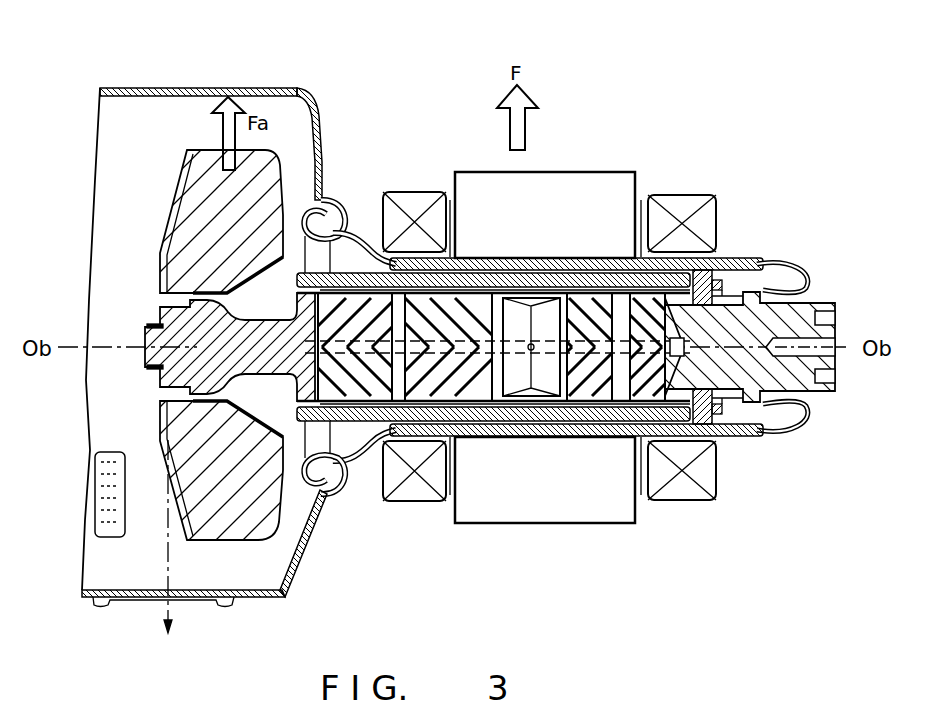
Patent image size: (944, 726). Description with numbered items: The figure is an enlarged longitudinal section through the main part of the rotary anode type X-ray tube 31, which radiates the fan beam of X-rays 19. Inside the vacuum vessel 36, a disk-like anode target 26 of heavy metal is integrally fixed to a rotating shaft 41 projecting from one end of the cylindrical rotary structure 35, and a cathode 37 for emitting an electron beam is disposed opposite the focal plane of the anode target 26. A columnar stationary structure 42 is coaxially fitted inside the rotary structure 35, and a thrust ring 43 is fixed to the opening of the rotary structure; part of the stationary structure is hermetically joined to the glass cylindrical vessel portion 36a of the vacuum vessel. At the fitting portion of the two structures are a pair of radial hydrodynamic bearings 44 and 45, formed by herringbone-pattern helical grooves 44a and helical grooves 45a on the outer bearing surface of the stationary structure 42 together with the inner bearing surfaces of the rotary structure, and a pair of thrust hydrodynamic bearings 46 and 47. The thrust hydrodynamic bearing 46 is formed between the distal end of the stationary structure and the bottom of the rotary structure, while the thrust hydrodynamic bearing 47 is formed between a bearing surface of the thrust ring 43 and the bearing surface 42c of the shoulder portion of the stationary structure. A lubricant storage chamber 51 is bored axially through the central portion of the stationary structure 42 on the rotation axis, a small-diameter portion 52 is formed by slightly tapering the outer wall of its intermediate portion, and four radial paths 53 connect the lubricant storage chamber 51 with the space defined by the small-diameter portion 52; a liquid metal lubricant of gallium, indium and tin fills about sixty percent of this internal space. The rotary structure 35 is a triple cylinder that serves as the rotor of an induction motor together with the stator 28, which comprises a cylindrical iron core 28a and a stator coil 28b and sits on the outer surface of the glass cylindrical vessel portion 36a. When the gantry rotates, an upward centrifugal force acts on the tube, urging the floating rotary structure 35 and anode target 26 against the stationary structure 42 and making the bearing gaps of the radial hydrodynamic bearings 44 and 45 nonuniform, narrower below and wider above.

The fan beam of X-rays 19 is at (169, 552).
The anode target 26 is at (167, 235).
The stator 28 is at (636, 196).
The cylindrical iron core 28a is at (575, 506).
The stator coil 28b is at (660, 497).
The X-ray tube 31 is at (120, 82).
The cylindrical rotary structure 35 is at (351, 270).
The vacuum vessel 36 is at (263, 594).
The glass cylindrical vessel portion 36a is at (745, 262).
The cathode 37 is at (97, 493).
The rotating shaft 41 is at (243, 326).
The columnar stationary structure 42 is at (493, 382).
The bearing surface of the shoulder portion 42c is at (777, 348).
The thrust ring 43 is at (718, 262).
The radial hydrodynamic bearing 44 is at (392, 436).
The helical grooves 44a is at (389, 330).
The radial hydrodynamic bearing 45 is at (625, 348).
The helical grooves 45a is at (605, 305).
The thrust hydrodynamic bearing 46 is at (334, 382).
The thrust hydrodynamic bearing 47 is at (722, 418).
The lubricant storage chamber 51 is at (685, 347).
The small-diameter portion 52 is at (533, 350).
The radial paths 53 is at (531, 343).